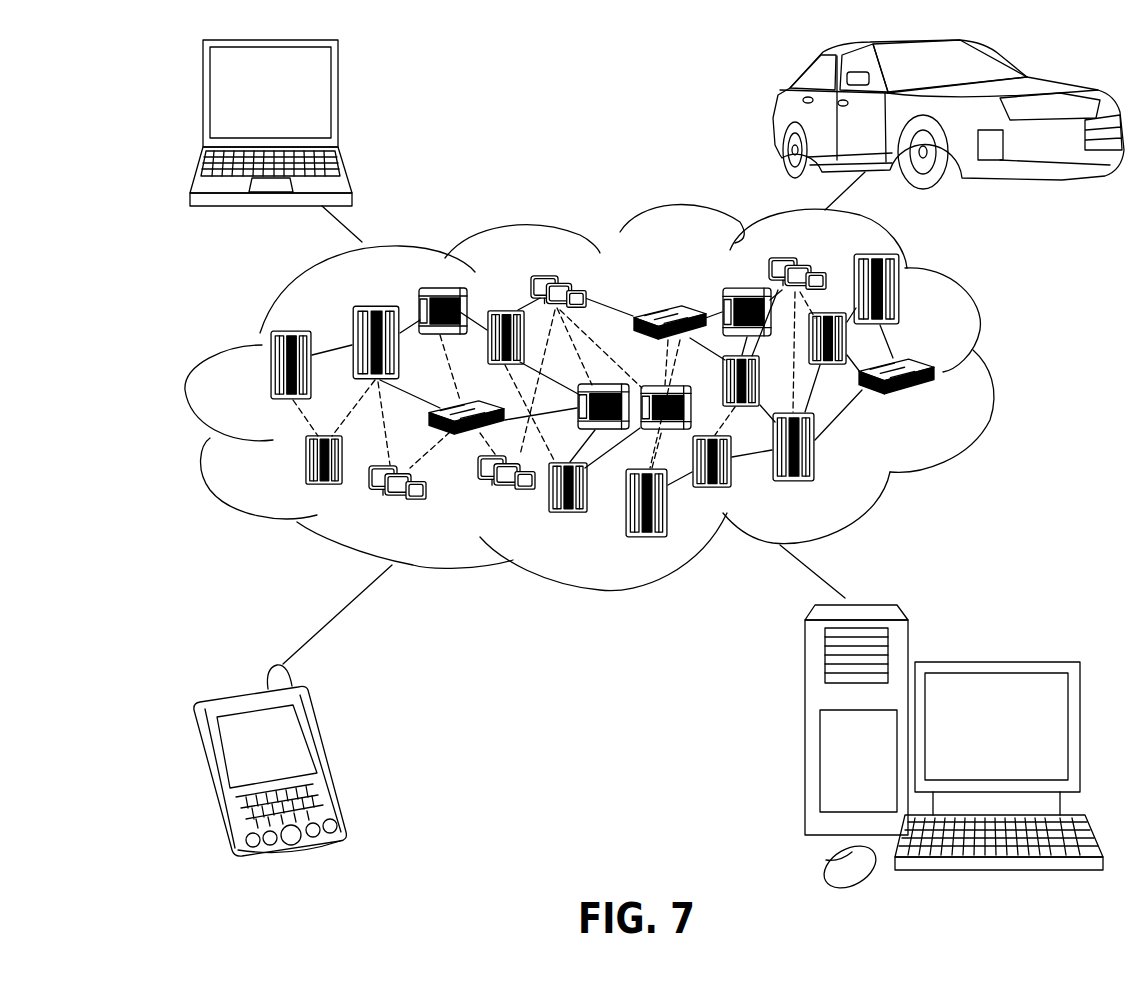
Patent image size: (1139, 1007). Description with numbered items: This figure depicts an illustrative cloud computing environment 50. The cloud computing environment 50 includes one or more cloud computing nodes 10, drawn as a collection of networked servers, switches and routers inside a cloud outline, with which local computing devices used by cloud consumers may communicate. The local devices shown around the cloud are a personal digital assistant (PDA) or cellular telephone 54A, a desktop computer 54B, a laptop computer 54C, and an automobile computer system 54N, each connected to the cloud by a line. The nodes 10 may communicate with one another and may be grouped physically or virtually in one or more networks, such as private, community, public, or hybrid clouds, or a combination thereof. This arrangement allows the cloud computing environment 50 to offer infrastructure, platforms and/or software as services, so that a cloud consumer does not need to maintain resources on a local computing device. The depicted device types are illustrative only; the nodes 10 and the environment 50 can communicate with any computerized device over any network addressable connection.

The laptop computer 54C is at (338, 101).
The automobile computer system 54N is at (776, 120).
The personal digital assistant (PDA) or cellular telephone 54A is at (333, 758).
The desktop computer 54B is at (993, 662).
The cloud computing environment 50 is at (993, 373).
The cloud computing nodes 10 is at (945, 409).